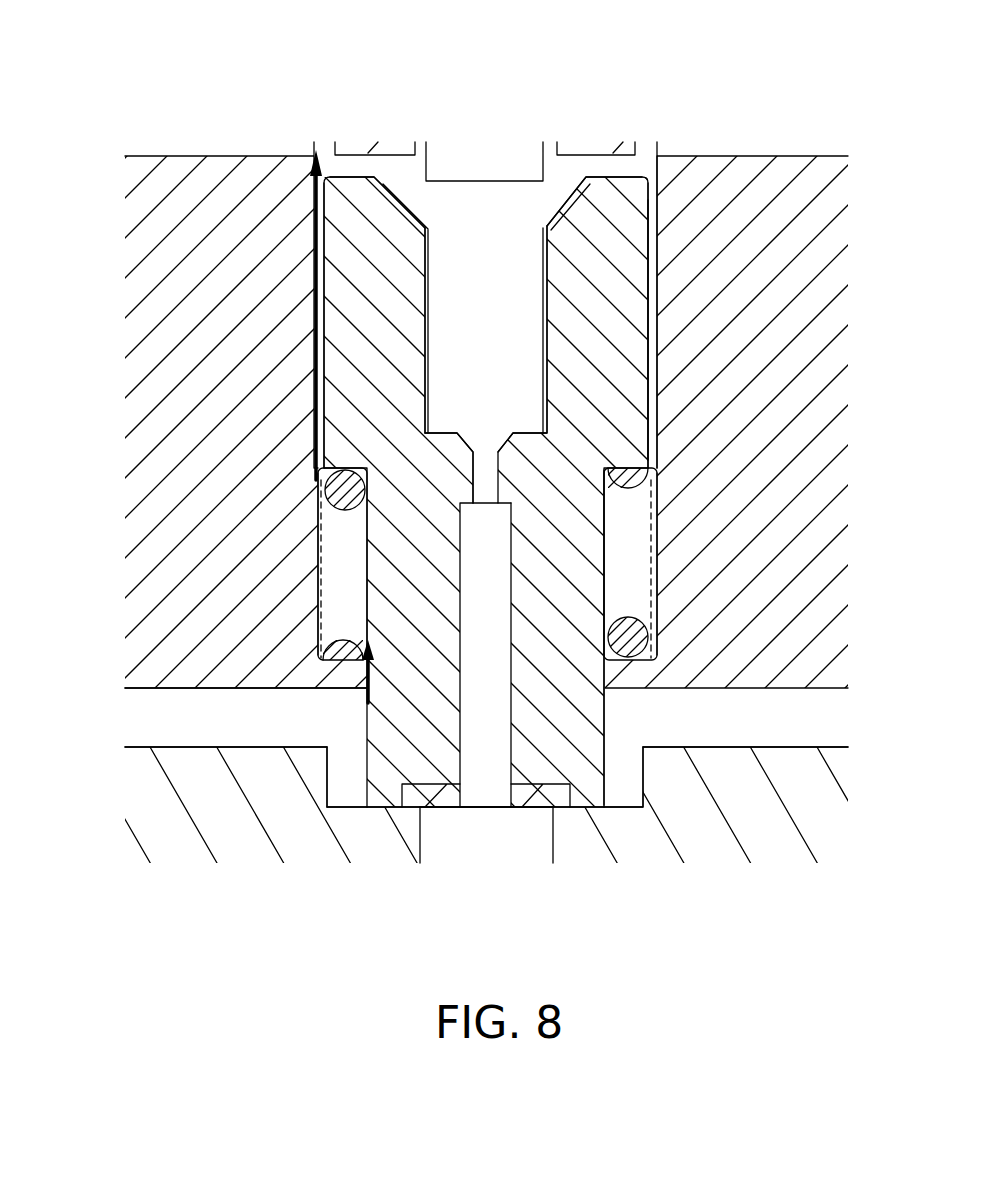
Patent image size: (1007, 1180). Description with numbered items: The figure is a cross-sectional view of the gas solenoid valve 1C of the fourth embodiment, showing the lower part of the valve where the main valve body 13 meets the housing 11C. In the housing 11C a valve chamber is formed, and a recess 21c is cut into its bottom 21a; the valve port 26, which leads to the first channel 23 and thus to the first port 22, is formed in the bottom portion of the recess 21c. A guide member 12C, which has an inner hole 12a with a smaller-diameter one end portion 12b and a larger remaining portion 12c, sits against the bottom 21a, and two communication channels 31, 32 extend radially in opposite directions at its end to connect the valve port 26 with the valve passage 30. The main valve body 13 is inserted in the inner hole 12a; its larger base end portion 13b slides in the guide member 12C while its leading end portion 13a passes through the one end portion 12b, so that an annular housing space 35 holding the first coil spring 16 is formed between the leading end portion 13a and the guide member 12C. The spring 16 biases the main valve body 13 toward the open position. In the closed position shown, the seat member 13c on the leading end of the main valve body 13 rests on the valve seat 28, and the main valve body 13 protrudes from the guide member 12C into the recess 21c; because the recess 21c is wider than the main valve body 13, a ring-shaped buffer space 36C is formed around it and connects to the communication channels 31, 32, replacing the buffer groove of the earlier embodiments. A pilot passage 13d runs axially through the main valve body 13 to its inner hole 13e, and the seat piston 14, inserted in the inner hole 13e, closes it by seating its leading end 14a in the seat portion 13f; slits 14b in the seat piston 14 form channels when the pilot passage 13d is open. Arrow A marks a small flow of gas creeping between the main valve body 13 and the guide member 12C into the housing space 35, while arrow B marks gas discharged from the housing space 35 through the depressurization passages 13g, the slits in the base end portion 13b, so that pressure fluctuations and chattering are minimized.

The gas solenoid valve 1C is at (870, 134).
The housing 11C is at (822, 817).
The guide member 12C is at (835, 393).
The inner hole 12a is at (656, 447).
The one end portion 12b is at (600, 700).
The remaining portion 12c is at (654, 547).
The main valve body 13 is at (641, 413).
The leading end portion 13a is at (600, 605).
The base end portion 13b is at (646, 345).
The seat member 13c is at (560, 798).
The pilot passage 13d is at (506, 590).
The inner hole 13e is at (425, 362).
The seat portion 13f is at (641, 410).
The depressurization passage 13g is at (313, 303).
The seat piston 14 is at (520, 165).
The leading end 14a is at (470, 440).
The slit 14b is at (425, 283).
The first coil spring 16 is at (313, 622).
The bottom 21a is at (160, 742).
The recess 21c is at (333, 767).
The first port 22 is at (487, 860).
The first channel 23 is at (420, 837).
The valve port 26 is at (485, 797).
The valve seat 28 is at (406, 787).
The valve passage 30 is at (177, 693).
The communication channel 31 is at (223, 687).
The communication channel 32 is at (710, 690).
The housing space 35 is at (320, 553).
The buffer space 36C is at (628, 773).
The arrow A is at (330, 670).
The arrow B is at (313, 360).